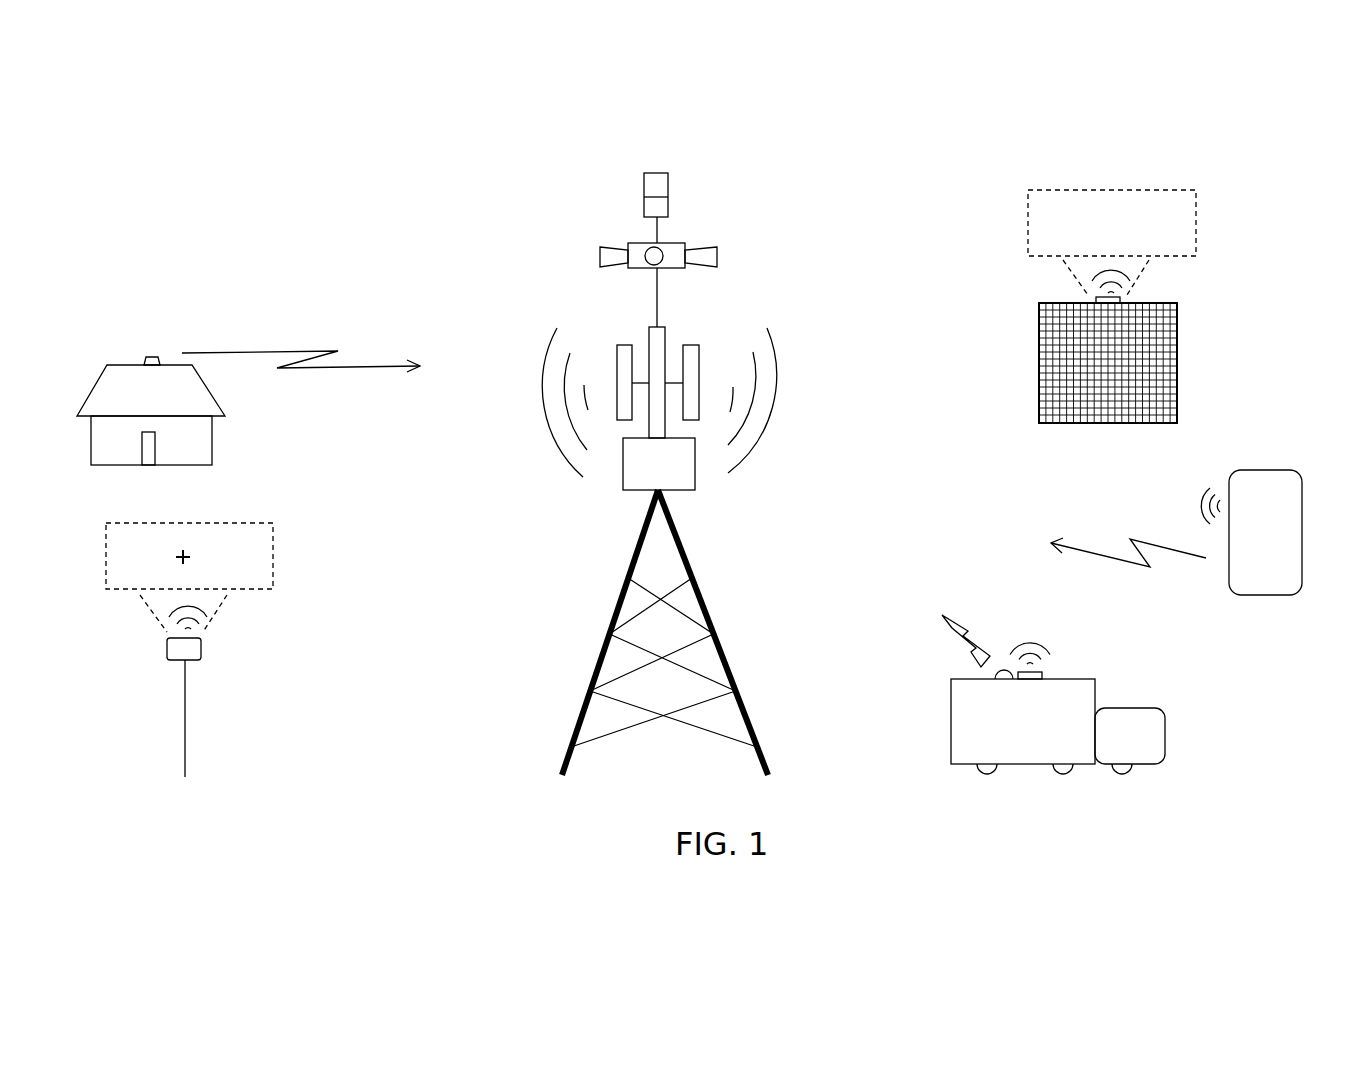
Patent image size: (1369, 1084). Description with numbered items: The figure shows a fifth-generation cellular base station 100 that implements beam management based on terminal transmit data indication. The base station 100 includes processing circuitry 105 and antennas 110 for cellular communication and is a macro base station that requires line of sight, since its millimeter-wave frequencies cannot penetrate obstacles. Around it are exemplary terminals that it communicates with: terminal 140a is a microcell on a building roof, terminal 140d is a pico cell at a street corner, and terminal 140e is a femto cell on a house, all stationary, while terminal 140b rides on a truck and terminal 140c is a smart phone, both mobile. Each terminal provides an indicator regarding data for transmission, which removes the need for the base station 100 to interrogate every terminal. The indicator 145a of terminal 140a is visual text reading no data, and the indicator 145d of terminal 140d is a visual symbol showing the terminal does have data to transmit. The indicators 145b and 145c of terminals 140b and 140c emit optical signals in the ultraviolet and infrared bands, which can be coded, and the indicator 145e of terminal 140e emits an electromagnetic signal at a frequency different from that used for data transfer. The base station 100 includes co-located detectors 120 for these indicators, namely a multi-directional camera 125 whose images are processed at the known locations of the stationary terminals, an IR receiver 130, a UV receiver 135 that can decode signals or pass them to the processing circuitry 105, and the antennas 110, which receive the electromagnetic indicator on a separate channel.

The base station 100 is at (470, 318).
The processing circuitry 105 is at (683, 479).
The antennas 110 is at (609, 325).
The detectors 120 is at (685, 460).
The camera 125 is at (640, 243).
The IR receiver 130 is at (644, 208).
The UV receiver 135 is at (668, 182).
The terminal 140a is at (1095, 299).
The terminal 140b is at (1042, 673).
The terminal 140c is at (1302, 503).
The terminal 140d is at (167, 647).
The terminal 140e is at (142, 360).
The indicator 145a is at (1198, 220).
The indicator 145b is at (1128, 539).
The indicator 145c is at (946, 648).
The indicator 145d is at (275, 553).
The indicator 145e is at (301, 336).